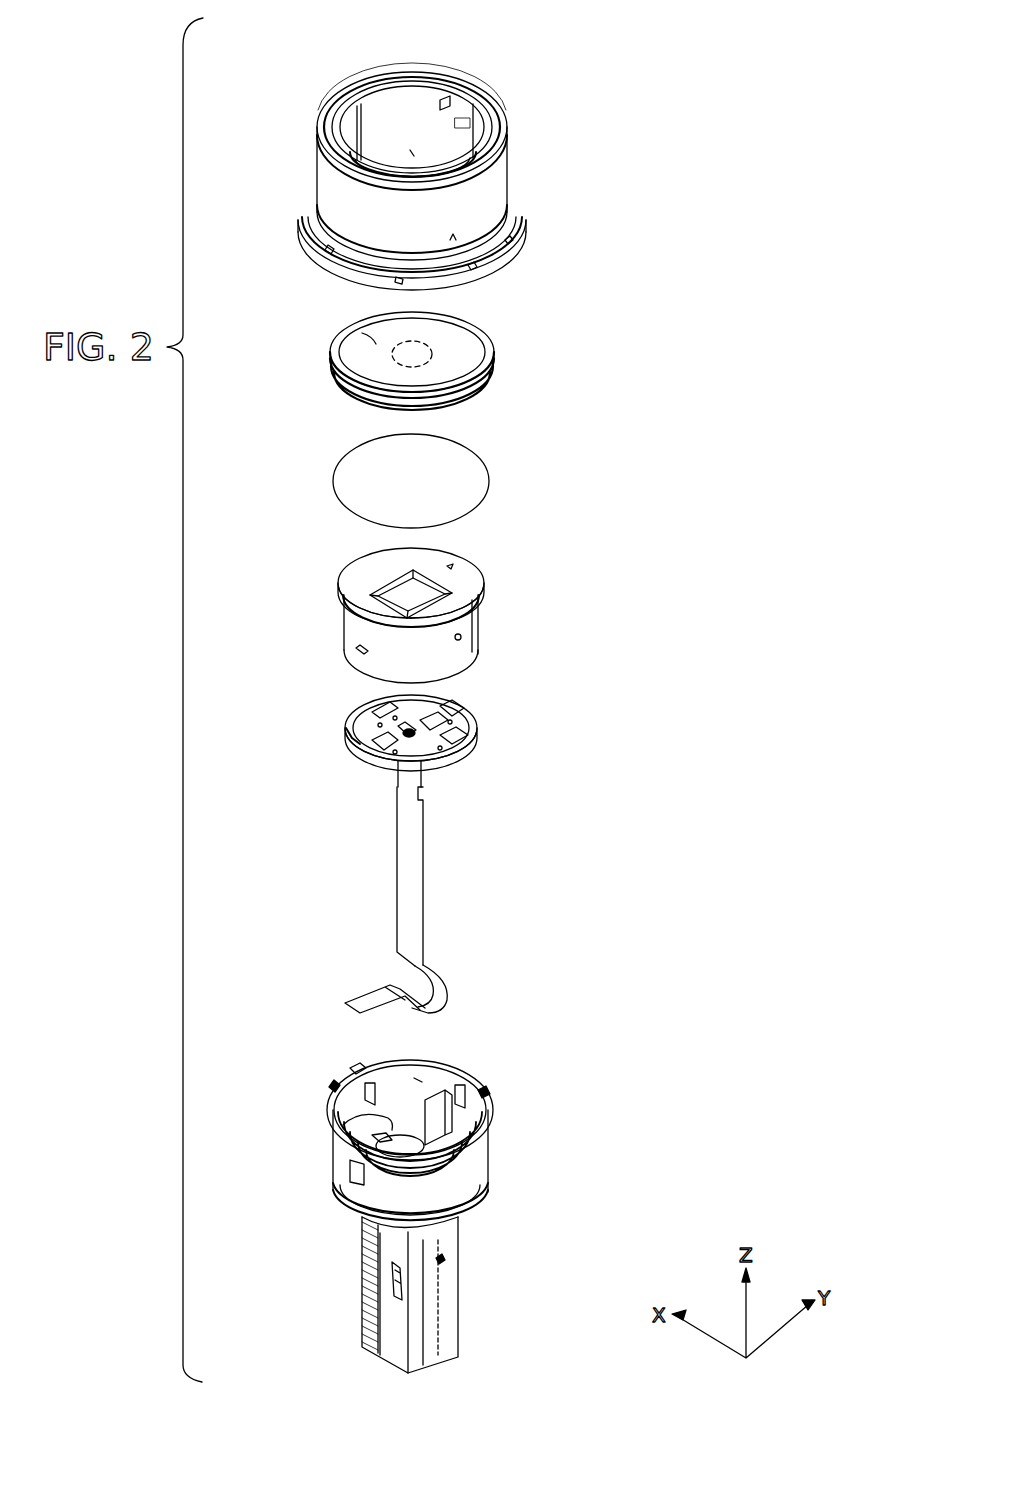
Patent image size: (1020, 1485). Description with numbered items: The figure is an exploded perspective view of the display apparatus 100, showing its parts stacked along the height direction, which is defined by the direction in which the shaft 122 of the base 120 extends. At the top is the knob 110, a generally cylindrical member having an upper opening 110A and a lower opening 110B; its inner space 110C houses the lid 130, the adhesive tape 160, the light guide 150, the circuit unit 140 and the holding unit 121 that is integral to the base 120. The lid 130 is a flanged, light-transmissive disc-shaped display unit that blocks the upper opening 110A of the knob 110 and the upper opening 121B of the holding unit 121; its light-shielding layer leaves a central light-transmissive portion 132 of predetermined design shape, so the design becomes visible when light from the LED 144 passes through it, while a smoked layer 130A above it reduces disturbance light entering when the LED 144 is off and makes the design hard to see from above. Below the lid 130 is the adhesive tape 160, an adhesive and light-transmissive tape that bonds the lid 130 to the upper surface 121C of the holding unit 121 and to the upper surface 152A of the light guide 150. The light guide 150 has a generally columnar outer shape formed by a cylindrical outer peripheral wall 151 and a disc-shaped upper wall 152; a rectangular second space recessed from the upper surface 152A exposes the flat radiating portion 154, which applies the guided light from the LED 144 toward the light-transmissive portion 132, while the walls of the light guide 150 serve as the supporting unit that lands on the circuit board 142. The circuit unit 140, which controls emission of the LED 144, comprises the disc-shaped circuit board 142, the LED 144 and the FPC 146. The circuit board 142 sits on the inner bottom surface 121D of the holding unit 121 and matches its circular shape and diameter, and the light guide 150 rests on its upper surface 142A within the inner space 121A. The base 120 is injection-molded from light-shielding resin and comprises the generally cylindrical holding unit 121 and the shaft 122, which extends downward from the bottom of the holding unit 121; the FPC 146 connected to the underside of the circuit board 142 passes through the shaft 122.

The display apparatus 100 is at (783, 54).
The knob 110 is at (517, 151).
The upper opening 110A is at (416, 72).
The lower opening 110B is at (474, 290).
The inner space 110C is at (462, 130).
The lid 130 is at (495, 358).
The holder portion 130A is at (366, 334).
The light-transmissive portion 132 is at (430, 342).
The adhesive tape 160 is at (490, 478).
The light guide 150 is at (325, 633).
The outer peripheral wall 151 is at (482, 634).
The upper wall 152 is at (484, 595).
The upper surface 152A is at (465, 584).
The radiating portion 154 is at (400, 600).
The circuit unit 140 is at (606, 840).
The circuit board 142 is at (478, 710).
The upper surface 142A is at (348, 742).
The LED 144 is at (440, 766).
The FPC 146 is at (425, 885).
The base 120 is at (531, 1113).
The holding unit 121 is at (488, 1156).
The inner space 121A is at (418, 1092).
The upper opening 121B is at (325, 1084).
The upper surface 121C is at (488, 1092).
The inner bottom surface 121D is at (388, 1128).
The shaft 122 is at (458, 1273).